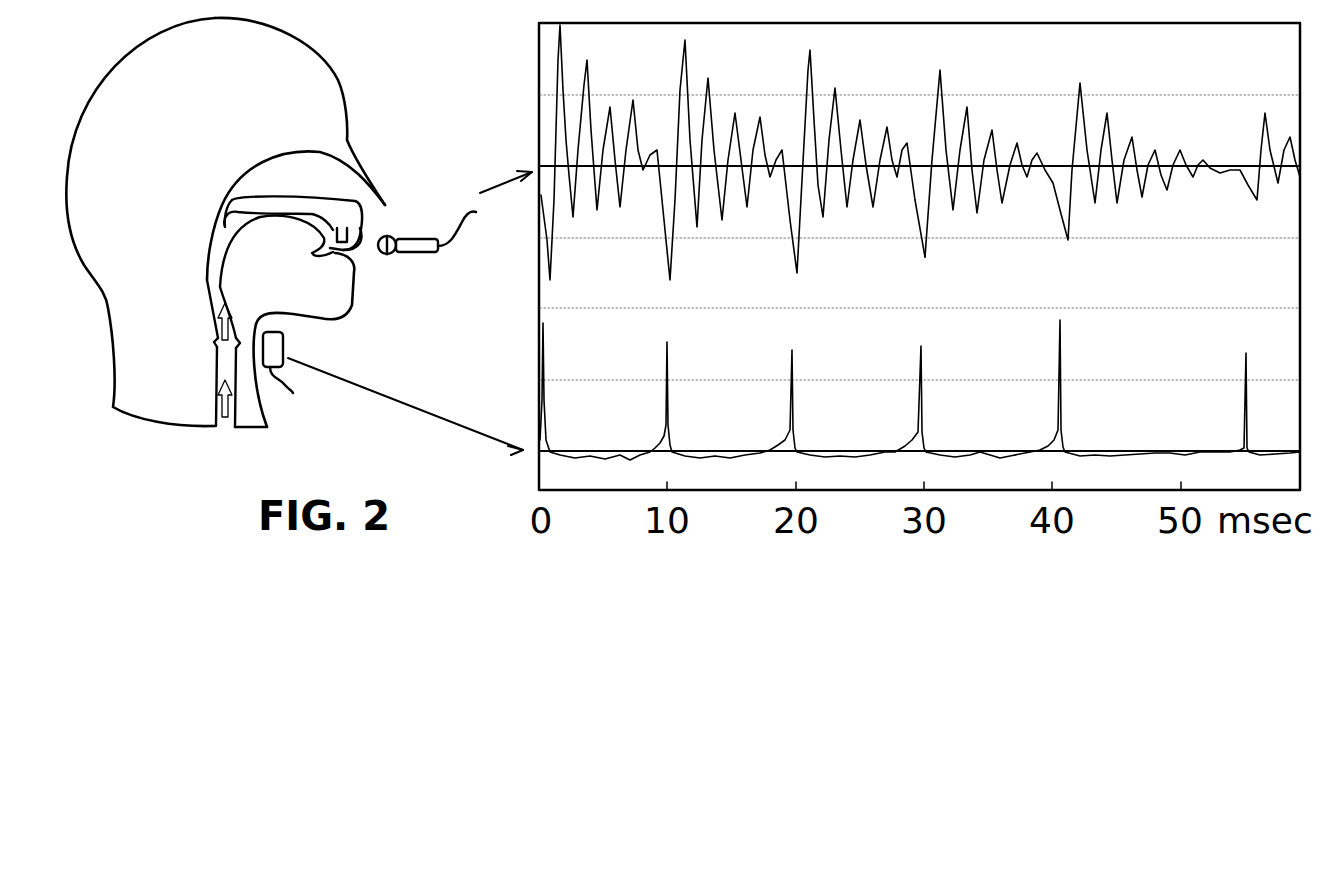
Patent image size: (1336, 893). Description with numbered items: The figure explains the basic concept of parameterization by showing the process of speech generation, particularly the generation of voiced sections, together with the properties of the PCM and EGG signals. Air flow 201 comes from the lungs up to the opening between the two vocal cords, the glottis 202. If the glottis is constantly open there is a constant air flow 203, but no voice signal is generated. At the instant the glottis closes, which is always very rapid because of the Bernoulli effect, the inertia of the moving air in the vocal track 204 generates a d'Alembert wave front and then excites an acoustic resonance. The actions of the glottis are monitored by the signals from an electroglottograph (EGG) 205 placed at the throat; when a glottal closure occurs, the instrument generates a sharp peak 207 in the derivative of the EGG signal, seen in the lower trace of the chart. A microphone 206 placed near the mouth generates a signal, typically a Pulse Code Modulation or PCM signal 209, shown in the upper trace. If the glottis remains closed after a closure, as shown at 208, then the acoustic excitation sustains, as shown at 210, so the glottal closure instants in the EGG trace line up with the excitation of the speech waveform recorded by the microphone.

The air flow 201 is at (227, 427).
The glottis 202 is at (217, 347).
The constant air flow 203 is at (217, 327).
The vocal track 204 is at (217, 240).
The electroglottograph (EGG) 205 is at (295, 343).
The microphone 206 is at (403, 237).
The sharp peak in the derivative of the EGG signal 207 is at (668, 348).
The glottis remaining closed after a closure 208 is at (1067, 343).
The PCM signal 209 is at (682, 267).
The sustained acoustic excitation 210 is at (1072, 240).